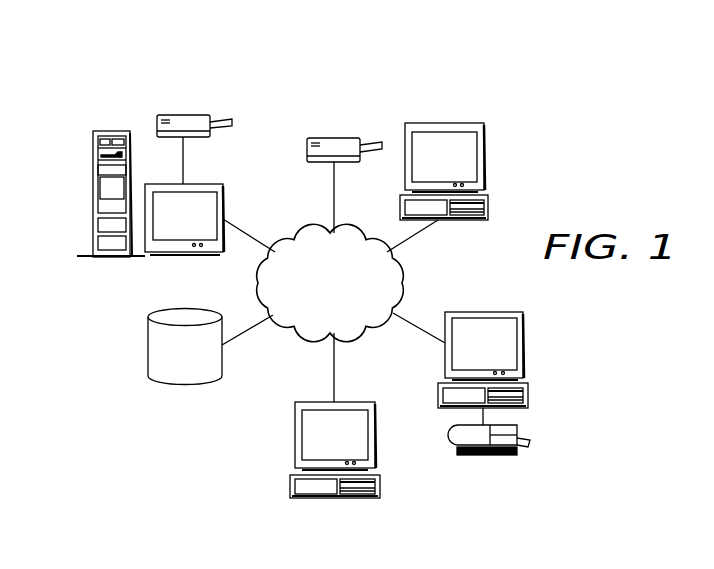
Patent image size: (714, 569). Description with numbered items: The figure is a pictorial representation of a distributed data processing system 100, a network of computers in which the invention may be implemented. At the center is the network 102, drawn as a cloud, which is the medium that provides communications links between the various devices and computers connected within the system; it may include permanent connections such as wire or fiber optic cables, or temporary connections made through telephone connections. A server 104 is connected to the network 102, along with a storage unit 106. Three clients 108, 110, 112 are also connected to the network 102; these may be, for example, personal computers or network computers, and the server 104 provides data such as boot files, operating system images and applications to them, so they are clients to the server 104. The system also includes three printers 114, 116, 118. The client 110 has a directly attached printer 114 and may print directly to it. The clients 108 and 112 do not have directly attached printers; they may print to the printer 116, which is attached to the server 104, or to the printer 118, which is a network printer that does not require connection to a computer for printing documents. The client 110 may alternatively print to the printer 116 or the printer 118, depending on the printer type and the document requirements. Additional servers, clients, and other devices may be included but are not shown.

The distributed data processing system 100 is at (438, 93).
The network 102 is at (302, 235).
The server 104 is at (93, 188).
The storage unit 106 is at (148, 343).
The client 108 is at (295, 435).
The client 110 is at (523, 345).
The client 112 is at (487, 158).
The printer 114 is at (530, 441).
The printer 116 is at (185, 113).
The printer 118 is at (335, 137).